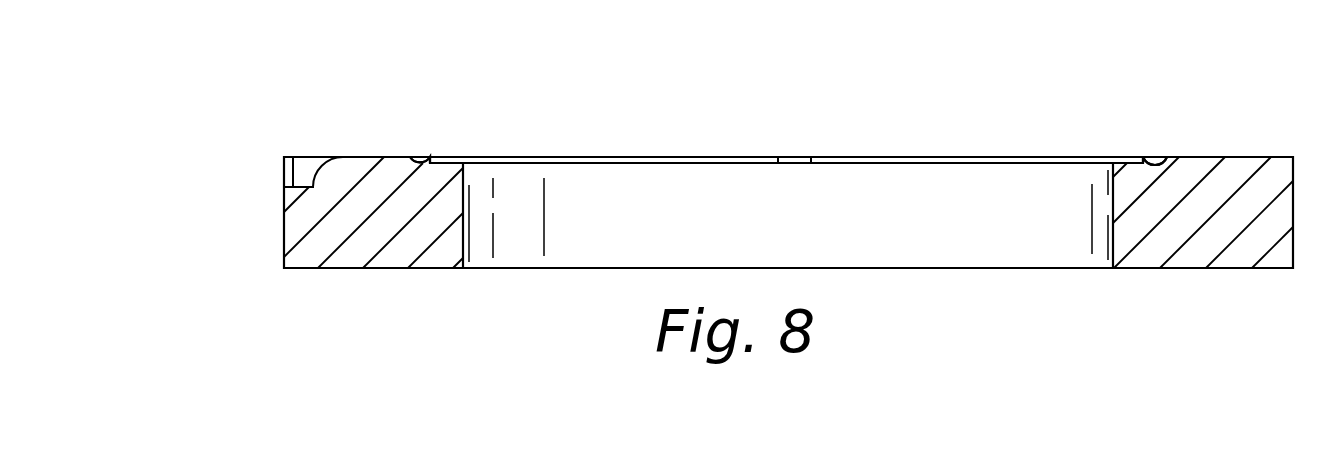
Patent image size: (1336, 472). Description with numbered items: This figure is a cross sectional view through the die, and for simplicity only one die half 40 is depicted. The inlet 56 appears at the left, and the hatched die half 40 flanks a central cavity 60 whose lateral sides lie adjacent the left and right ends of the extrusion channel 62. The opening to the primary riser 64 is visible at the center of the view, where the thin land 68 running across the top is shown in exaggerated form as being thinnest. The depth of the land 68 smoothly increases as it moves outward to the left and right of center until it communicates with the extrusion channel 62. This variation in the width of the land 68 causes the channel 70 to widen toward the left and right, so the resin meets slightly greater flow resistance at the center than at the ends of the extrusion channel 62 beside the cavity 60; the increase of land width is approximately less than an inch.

The die half 40 is at (407, 247).
The inlet 56 is at (322, 166).
The cavity 60 is at (824, 234).
The extrusion channel 62 is at (422, 160).
The primary riser 64 is at (797, 162).
The land 68 is at (452, 158).
The channel 70 is at (633, 160).